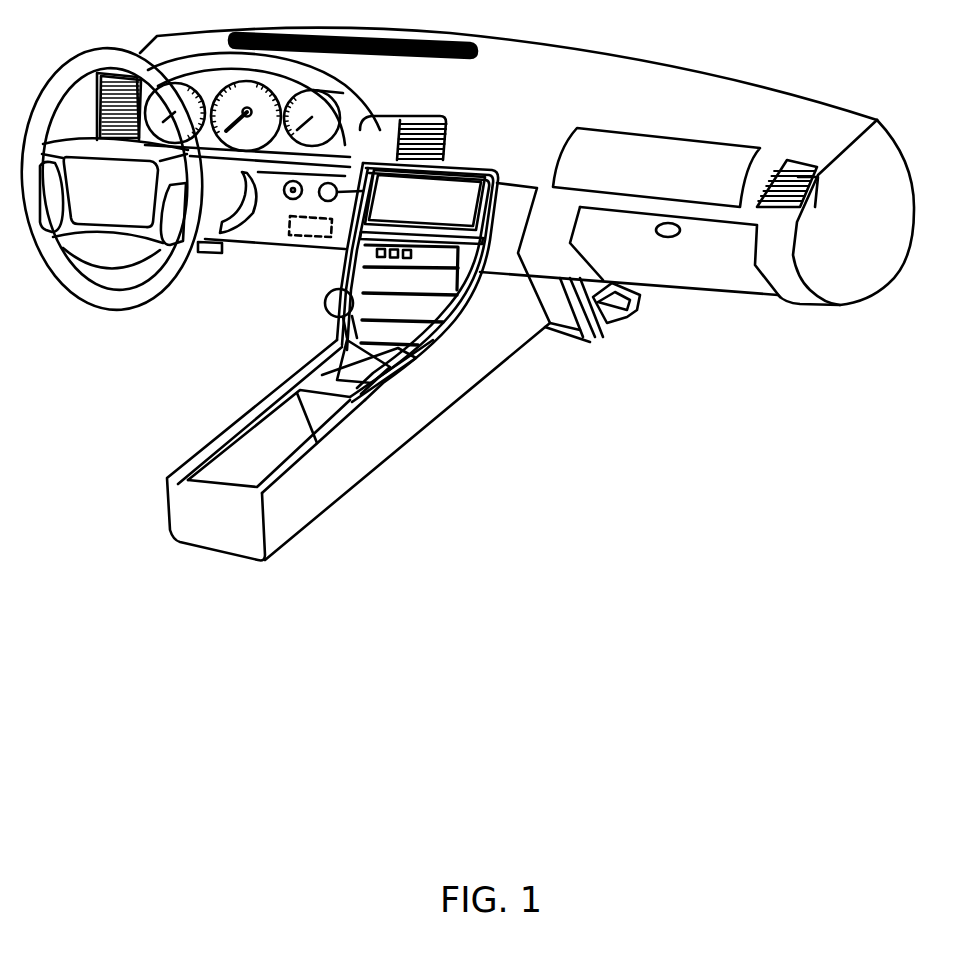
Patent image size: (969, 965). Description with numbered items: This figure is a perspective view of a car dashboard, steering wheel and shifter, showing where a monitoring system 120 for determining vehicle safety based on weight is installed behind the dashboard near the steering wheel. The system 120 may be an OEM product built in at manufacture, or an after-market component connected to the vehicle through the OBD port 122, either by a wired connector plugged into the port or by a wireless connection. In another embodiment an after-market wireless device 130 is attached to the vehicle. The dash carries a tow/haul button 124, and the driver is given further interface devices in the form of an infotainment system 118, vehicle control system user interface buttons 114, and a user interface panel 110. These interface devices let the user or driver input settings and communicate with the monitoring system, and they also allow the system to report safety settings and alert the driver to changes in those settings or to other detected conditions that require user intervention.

The user interface panel 110 is at (471, 235).
The vehicle control system user interface buttons 114 is at (364, 256).
The infotainment system 118 is at (437, 280).
The monitoring system 120 is at (277, 237).
The OBD port 122 is at (200, 252).
The tow/haul button 124 is at (368, 193).
The after-market wireless device 130 is at (630, 313).